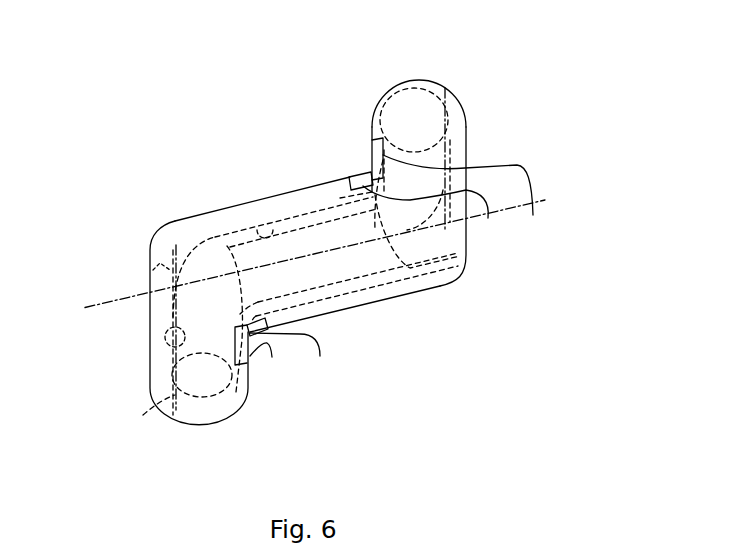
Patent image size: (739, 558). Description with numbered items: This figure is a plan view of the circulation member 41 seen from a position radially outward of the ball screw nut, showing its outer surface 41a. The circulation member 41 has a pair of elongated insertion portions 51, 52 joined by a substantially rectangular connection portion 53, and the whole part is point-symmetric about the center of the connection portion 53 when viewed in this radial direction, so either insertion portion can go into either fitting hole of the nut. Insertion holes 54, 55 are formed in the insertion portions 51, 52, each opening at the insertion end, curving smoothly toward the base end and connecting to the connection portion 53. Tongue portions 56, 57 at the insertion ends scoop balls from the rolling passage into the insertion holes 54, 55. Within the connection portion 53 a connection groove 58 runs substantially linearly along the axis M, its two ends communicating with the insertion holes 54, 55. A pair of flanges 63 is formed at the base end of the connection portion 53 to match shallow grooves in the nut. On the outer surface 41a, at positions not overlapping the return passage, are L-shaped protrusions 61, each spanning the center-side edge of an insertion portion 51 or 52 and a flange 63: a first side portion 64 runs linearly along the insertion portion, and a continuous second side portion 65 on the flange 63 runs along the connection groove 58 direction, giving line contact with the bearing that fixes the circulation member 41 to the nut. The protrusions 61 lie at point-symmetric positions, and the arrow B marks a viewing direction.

The circulation member 41 is at (535, 64).
The outer surface 41a is at (150, 272).
The insertion portion 51 is at (455, 101).
The insertion portion 52 is at (158, 408).
The connection portion 53 is at (361, 306).
The insertion hole 54 is at (460, 137).
The insertion hole 55 is at (165, 337).
The tongue portion 56 is at (405, 81).
The tongue portion 57 is at (160, 410).
The connection groove 58 is at (262, 226).
The protrusion 61 is at (470, 240).
The flange 63 is at (188, 218).
The first side portion 64 is at (398, 267).
The second side portion 65 is at (376, 282).
The axis M is at (543, 200).
The viewing direction arrow B is at (302, 153).